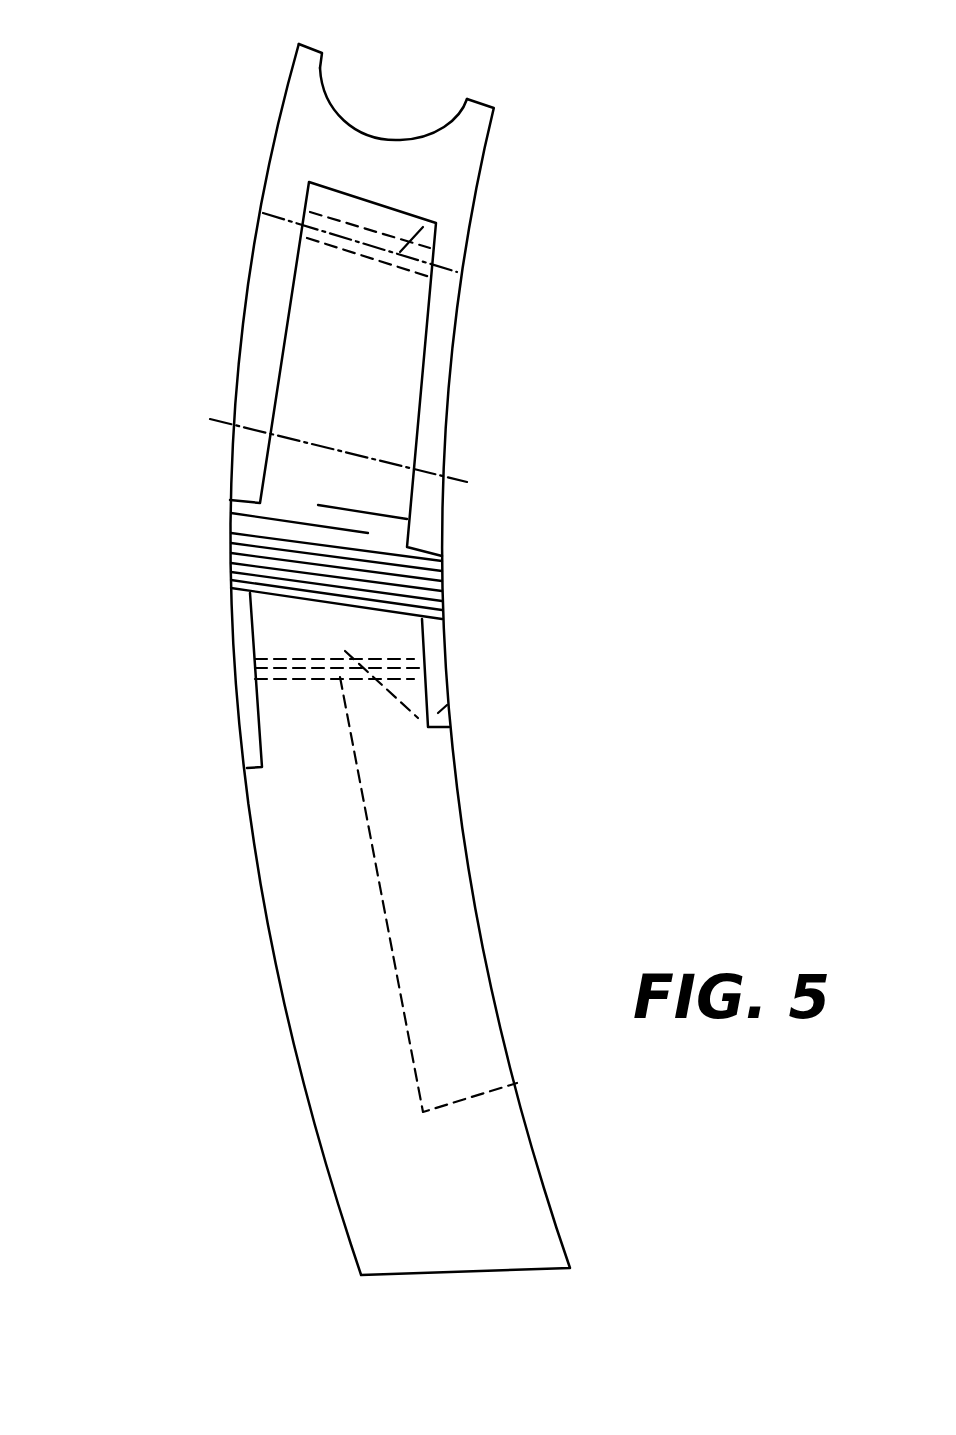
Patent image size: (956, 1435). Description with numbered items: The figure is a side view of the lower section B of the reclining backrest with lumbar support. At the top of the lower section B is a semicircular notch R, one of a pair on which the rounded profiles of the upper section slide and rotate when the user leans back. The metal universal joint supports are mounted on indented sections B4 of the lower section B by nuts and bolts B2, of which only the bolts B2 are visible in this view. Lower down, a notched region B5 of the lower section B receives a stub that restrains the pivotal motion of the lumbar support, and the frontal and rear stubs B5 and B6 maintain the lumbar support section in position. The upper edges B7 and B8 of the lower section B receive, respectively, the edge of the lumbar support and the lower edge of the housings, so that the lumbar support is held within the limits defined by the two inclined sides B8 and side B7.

The semicircular notch R is at (373, 135).
The lower section B is at (401, 659).
The bolt B2 is at (420, 228).
The indented section B4 is at (336, 369).
The notched region B5 is at (445, 663).
The rear stub B6 is at (238, 730).
The upper edge B7 is at (331, 603).
The upper edge B8 is at (414, 214).